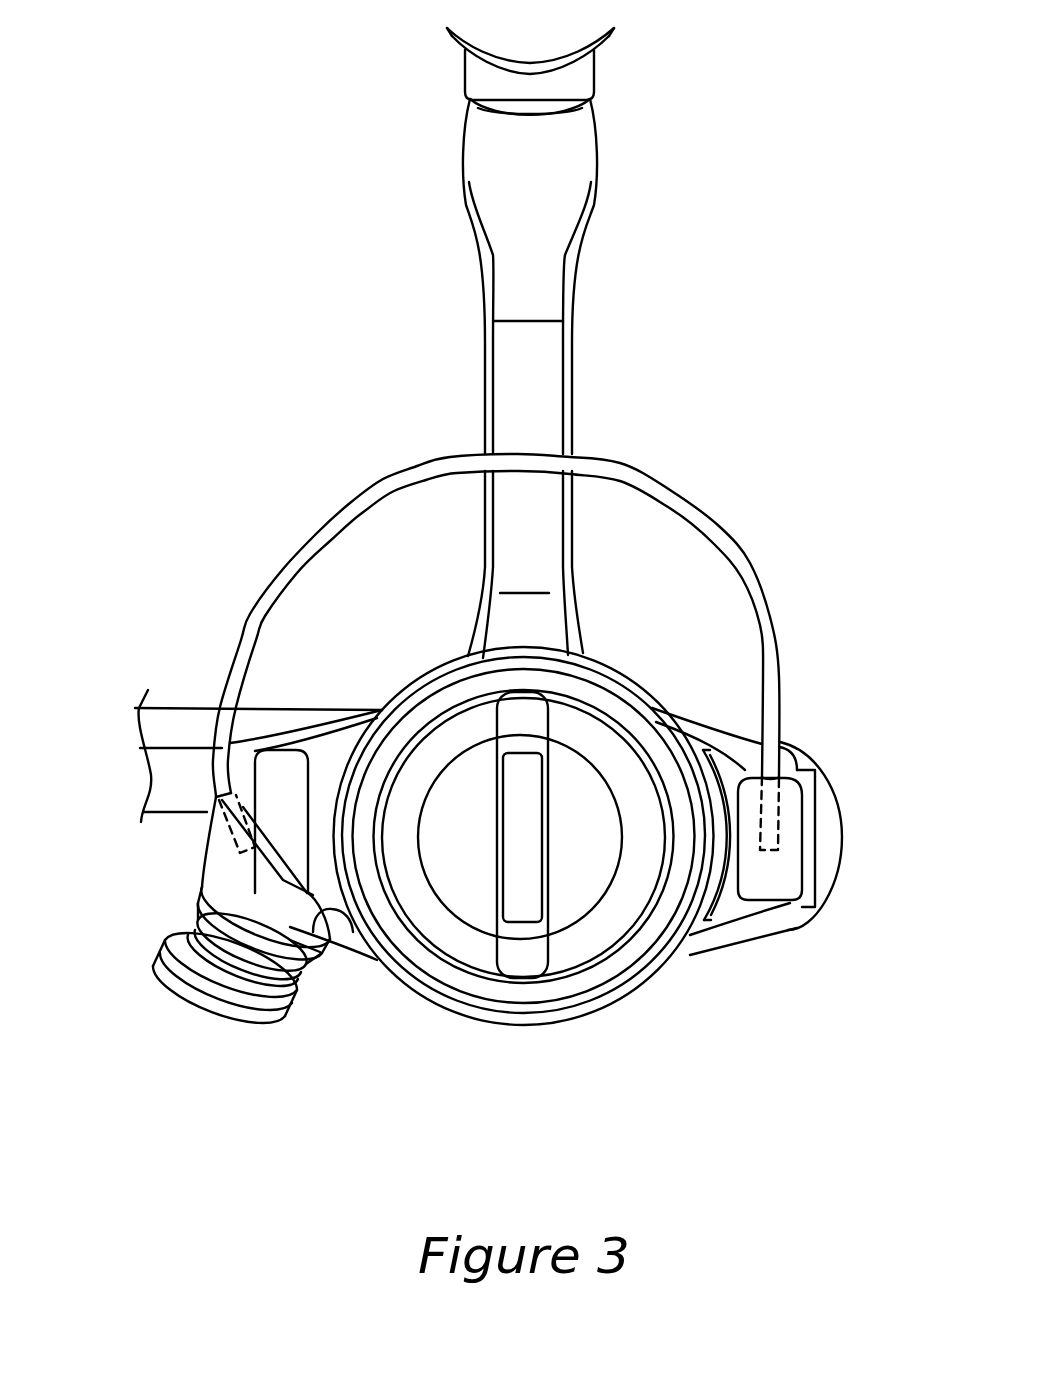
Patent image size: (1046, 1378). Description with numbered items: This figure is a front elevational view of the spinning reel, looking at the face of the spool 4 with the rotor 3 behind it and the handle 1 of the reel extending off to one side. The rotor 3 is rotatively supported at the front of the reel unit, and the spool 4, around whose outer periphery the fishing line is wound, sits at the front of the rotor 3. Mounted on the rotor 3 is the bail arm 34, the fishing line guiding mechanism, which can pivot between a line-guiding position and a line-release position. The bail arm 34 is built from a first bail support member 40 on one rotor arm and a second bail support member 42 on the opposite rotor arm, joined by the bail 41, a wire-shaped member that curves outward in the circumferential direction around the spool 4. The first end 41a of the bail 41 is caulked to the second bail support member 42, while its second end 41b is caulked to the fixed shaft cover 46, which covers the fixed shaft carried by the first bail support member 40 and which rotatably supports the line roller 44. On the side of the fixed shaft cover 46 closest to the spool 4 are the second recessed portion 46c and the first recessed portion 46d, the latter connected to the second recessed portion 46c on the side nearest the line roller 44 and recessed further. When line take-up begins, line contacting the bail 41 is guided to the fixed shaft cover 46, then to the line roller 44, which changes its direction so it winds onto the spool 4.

The handle 1 is at (163, 707).
The rotor 3 is at (787, 930).
The spool 4 is at (455, 980).
The bail arm 34 is at (218, 1013).
The first bail support member 40 is at (210, 822).
The bail 41 is at (727, 537).
The first end of the bail 41a is at (783, 800).
The second end of the bail 41b is at (262, 810).
The second bail support member 42 is at (790, 823).
The line roller 44 is at (180, 913).
The fixed shaft cover 46 is at (210, 851).
The second recessed portion 46c is at (303, 787).
The first recessed portion 46d is at (352, 935).